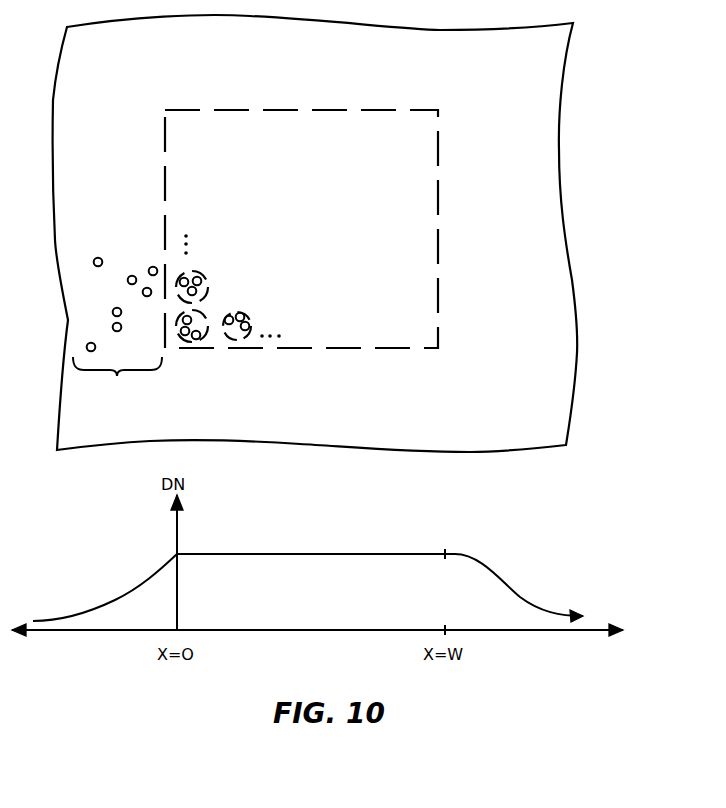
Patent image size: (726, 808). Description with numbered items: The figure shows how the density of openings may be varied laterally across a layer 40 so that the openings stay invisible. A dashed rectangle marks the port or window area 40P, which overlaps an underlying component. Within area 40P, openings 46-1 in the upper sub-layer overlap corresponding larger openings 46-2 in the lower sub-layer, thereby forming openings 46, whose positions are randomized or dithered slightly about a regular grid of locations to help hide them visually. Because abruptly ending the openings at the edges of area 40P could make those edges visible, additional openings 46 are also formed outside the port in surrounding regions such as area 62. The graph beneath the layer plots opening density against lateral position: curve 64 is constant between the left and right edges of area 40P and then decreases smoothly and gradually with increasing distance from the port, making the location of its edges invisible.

The layer 40 is at (552, 195).
The area 40P is at (438, 252).
The openings 46 is at (98, 258).
The openings in first layer 46-1 is at (235, 318).
The openings in second layer 46-2 is at (276, 361).
The surrounding area 62 is at (117, 381).
The curve 64 is at (364, 554).